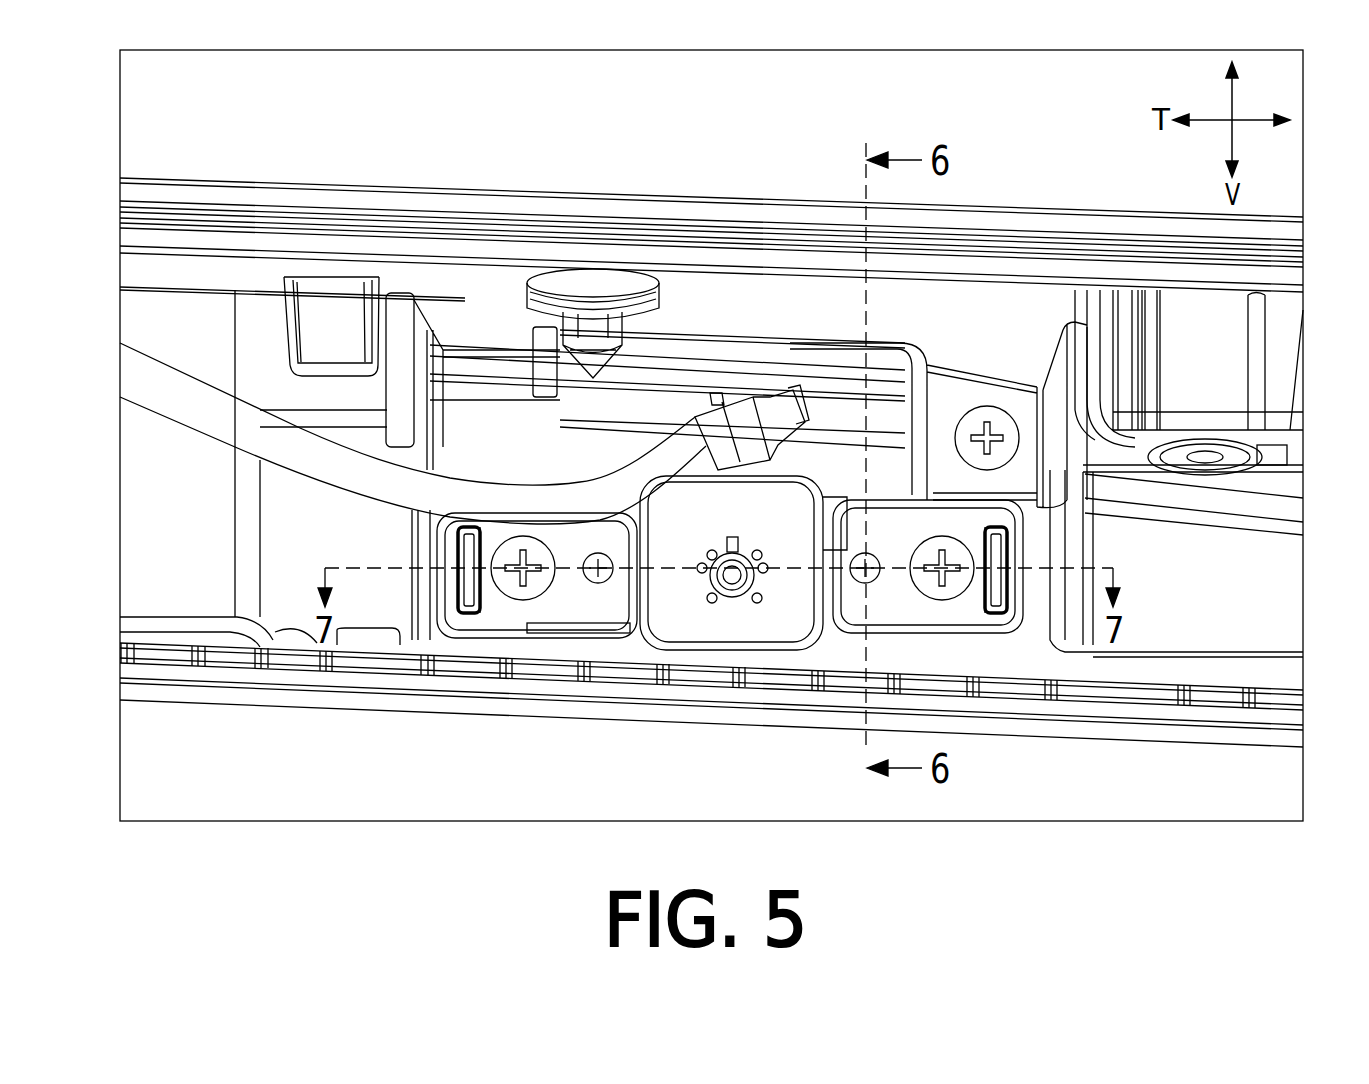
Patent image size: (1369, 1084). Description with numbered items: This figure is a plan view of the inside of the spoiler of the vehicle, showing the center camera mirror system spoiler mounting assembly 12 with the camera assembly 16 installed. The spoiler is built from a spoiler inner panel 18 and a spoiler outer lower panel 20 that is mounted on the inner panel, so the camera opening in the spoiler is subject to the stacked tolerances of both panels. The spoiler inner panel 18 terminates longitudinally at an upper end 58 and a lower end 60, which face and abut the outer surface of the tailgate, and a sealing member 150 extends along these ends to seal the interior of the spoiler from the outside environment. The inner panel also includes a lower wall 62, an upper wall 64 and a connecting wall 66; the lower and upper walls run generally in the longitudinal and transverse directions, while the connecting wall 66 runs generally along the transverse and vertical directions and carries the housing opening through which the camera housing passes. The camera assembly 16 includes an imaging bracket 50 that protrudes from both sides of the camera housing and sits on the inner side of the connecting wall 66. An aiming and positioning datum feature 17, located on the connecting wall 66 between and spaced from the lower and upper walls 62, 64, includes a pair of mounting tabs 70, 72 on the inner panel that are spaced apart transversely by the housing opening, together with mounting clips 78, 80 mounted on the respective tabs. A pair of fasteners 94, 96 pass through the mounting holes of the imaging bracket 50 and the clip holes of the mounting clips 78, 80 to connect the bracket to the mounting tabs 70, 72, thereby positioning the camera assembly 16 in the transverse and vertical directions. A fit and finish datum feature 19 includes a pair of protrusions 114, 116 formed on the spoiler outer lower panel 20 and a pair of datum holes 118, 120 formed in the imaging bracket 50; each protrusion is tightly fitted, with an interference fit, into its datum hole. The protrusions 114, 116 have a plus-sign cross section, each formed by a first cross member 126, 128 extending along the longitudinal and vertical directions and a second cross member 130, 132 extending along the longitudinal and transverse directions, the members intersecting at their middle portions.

The mounting assembly 12 is at (740, 157).
The camera assembly 16 is at (717, 657).
The aiming and positioning datum feature 17 is at (779, 565).
The spoiler inner panel 18 is at (262, 705).
The fit and finish datum feature 19 is at (733, 536).
The spoiler outer lower panel 20 is at (430, 188).
The imaging bracket 50 is at (553, 605).
The upper end 58 is at (606, 200).
The lower end 60 is at (317, 677).
The lower wall 62 is at (217, 662).
The upper wall 64 is at (135, 271).
The connecting wall 66 is at (188, 538).
The mounting tab 70 is at (523, 642).
The mounting tab 72 is at (981, 650).
The mounting clip 78 is at (470, 556).
The mounting clip 80 is at (1030, 557).
The fastener 94 is at (507, 600).
The fastener 96 is at (970, 610).
The protrusion 114 is at (590, 584).
The protrusion 116 is at (860, 584).
The datum hole 118 is at (594, 552).
The datum hole 120 is at (866, 553).
The first cross member 126 is at (507, 518).
The first cross member 128 is at (956, 425).
The second cross member 130 is at (598, 552).
The second cross member 132 is at (1090, 505).
The sealing member 150 is at (135, 234).